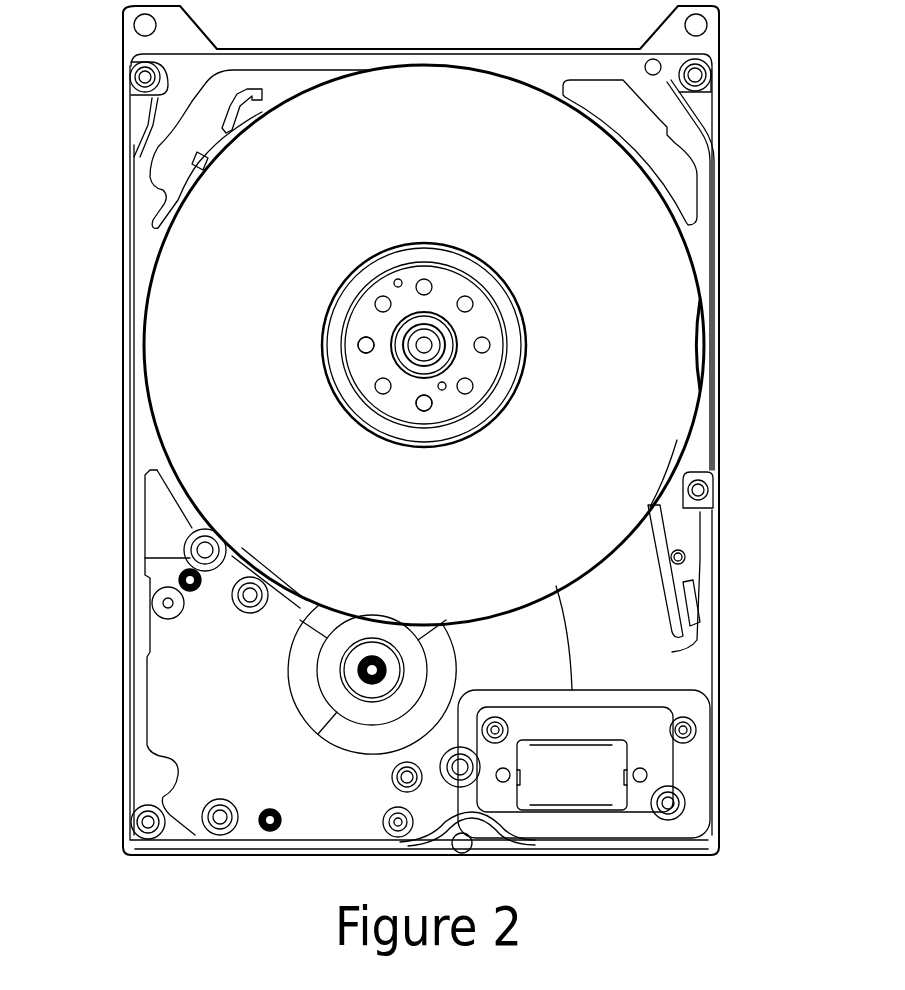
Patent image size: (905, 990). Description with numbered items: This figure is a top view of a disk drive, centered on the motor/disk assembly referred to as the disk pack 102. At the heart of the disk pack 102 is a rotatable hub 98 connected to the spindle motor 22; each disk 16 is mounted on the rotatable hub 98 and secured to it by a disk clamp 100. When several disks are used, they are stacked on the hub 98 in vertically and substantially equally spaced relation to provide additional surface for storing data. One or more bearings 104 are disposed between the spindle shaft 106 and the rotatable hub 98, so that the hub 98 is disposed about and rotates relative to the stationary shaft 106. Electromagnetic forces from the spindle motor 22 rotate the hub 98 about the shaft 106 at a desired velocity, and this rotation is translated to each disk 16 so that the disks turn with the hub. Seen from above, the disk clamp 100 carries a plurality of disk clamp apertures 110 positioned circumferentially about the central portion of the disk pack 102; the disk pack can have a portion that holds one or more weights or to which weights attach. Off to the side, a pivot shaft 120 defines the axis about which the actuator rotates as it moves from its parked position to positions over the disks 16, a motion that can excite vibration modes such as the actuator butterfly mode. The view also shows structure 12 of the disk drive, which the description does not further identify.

The base deck 12 is at (142, 452).
The disk 16 is at (262, 272).
The spindle motor 22 is at (537, 334).
The rotatable hub 98 is at (333, 418).
The disk clamp 100 is at (487, 372).
The disk pack 102 is at (705, 243).
The bearing 104 is at (372, 348).
The spindle shaft 106 is at (426, 410).
The disk clamp aperture 110 is at (426, 280).
The pivot shaft 120 is at (357, 668).